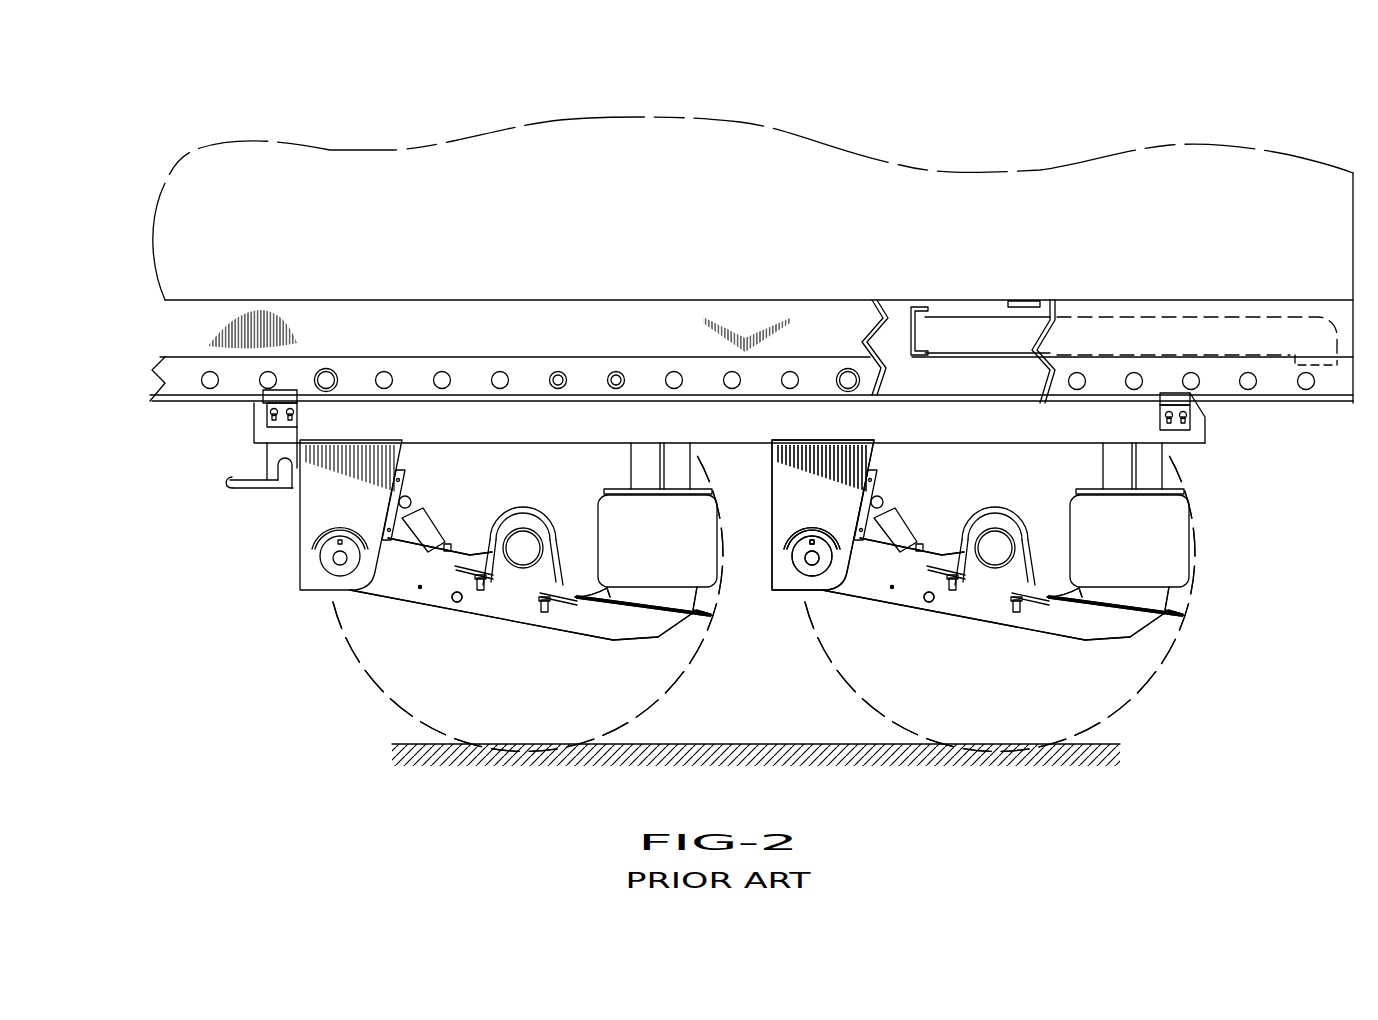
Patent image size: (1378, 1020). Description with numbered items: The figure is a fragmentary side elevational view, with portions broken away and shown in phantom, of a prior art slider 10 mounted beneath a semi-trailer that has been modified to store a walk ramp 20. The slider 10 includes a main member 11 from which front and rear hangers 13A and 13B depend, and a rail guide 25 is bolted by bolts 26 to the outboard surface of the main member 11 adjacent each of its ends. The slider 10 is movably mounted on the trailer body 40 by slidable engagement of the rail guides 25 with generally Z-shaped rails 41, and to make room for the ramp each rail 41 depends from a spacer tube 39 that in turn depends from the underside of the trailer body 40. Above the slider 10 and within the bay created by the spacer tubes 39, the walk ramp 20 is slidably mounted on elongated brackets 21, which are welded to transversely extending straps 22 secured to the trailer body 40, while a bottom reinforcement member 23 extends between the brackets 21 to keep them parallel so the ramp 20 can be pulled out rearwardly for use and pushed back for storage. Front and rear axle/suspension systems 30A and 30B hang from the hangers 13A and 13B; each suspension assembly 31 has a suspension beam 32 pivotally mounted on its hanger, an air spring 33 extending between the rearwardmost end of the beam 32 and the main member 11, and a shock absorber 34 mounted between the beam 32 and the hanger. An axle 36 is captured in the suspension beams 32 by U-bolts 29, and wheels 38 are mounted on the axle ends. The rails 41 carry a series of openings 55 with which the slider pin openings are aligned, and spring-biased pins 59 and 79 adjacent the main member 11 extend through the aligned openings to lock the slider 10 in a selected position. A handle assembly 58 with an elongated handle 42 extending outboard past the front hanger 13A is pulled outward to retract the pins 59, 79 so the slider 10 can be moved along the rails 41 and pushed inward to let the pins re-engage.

The slider 10 is at (1280, 523).
The main member 11 is at (1196, 445).
The front hangers 13A is at (300, 578).
The rear hangers 13B is at (790, 592).
The walk ramp 20 is at (983, 333).
The brackets 21 is at (915, 328).
The straps 22 is at (1035, 305).
The bottom reinforcement member 23 is at (1325, 365).
The rail guides 25 is at (266, 396).
The bolts 26 is at (270, 415).
The U-bolts 29 is at (490, 537).
The front axle/suspension system 30A is at (391, 602).
The rear axle/suspension system 30B is at (1153, 626).
The suspension assembly 31 is at (660, 635).
The suspension beam 32 is at (503, 603).
The air spring 33 is at (652, 553).
The shock absorber 34 is at (423, 530).
The axle 36 is at (523, 548).
The wheels 38 is at (363, 677).
The spacer tubes 39 is at (697, 300).
The trailer body 40 is at (865, 172).
The Z-shaped rails 41 is at (343, 388).
The handle 42 is at (243, 487).
The openings 55 is at (615, 372).
The handle assembly 58 is at (227, 478).
The pin 59 is at (327, 372).
The pin 79 is at (847, 369).